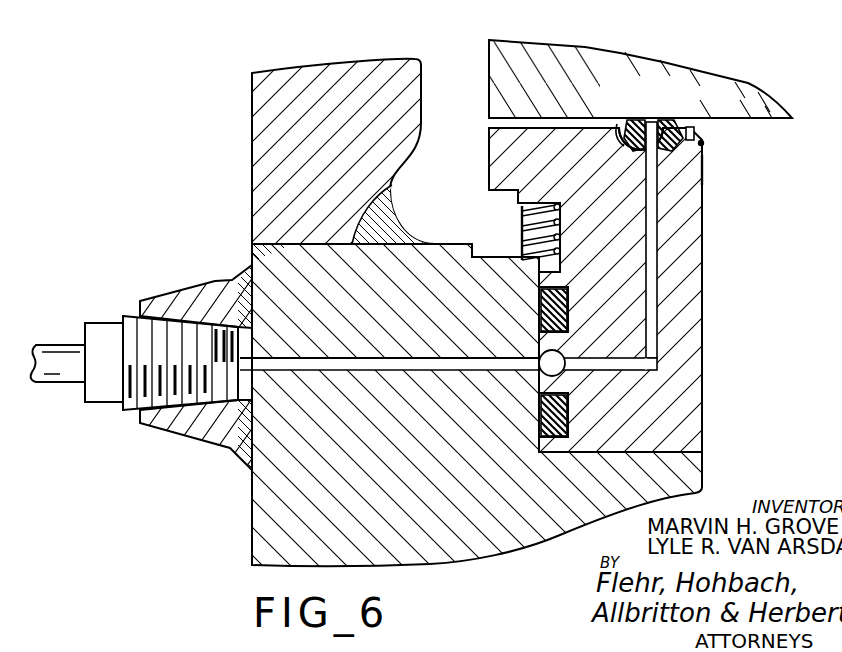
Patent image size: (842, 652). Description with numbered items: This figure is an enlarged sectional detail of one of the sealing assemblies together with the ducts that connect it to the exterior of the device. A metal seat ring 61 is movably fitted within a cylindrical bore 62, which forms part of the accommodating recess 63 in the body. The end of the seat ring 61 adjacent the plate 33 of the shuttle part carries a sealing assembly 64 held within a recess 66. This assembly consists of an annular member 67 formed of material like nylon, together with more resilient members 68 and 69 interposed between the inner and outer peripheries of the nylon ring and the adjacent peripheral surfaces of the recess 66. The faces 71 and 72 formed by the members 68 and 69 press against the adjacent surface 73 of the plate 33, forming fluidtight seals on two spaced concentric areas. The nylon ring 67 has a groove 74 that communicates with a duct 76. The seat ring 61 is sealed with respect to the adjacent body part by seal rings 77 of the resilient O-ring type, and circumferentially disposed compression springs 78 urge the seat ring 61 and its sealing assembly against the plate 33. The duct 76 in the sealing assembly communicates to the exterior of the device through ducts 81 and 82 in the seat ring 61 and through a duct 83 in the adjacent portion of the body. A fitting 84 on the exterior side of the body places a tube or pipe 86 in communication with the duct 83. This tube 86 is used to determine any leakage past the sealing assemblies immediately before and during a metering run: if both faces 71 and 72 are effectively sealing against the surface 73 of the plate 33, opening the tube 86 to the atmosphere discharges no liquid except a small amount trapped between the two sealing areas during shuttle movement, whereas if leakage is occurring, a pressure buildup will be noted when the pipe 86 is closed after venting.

The plate 33 is at (765, 96).
The seat ring 61 is at (706, 262).
The cylindrical bore 62 is at (540, 378).
The accommodating recess 63 is at (548, 456).
The sealing assembly 64 is at (702, 144).
The recess 66 is at (636, 156).
The annular member 67 is at (640, 120).
The resilient member 68 is at (696, 136).
The resilient member 69 is at (620, 128).
The face 71 is at (673, 124).
The face 72 is at (640, 118).
The surface 73 is at (766, 120).
The groove 74 is at (663, 120).
The duct 76 is at (693, 172).
The seal rings 77 is at (542, 309).
The compression springs 78 is at (560, 236).
The duct 81 is at (651, 316).
The duct 82 is at (626, 366).
The duct 83 is at (340, 366).
The fitting 84 is at (185, 295).
The tube or pipe 86 is at (62, 343).